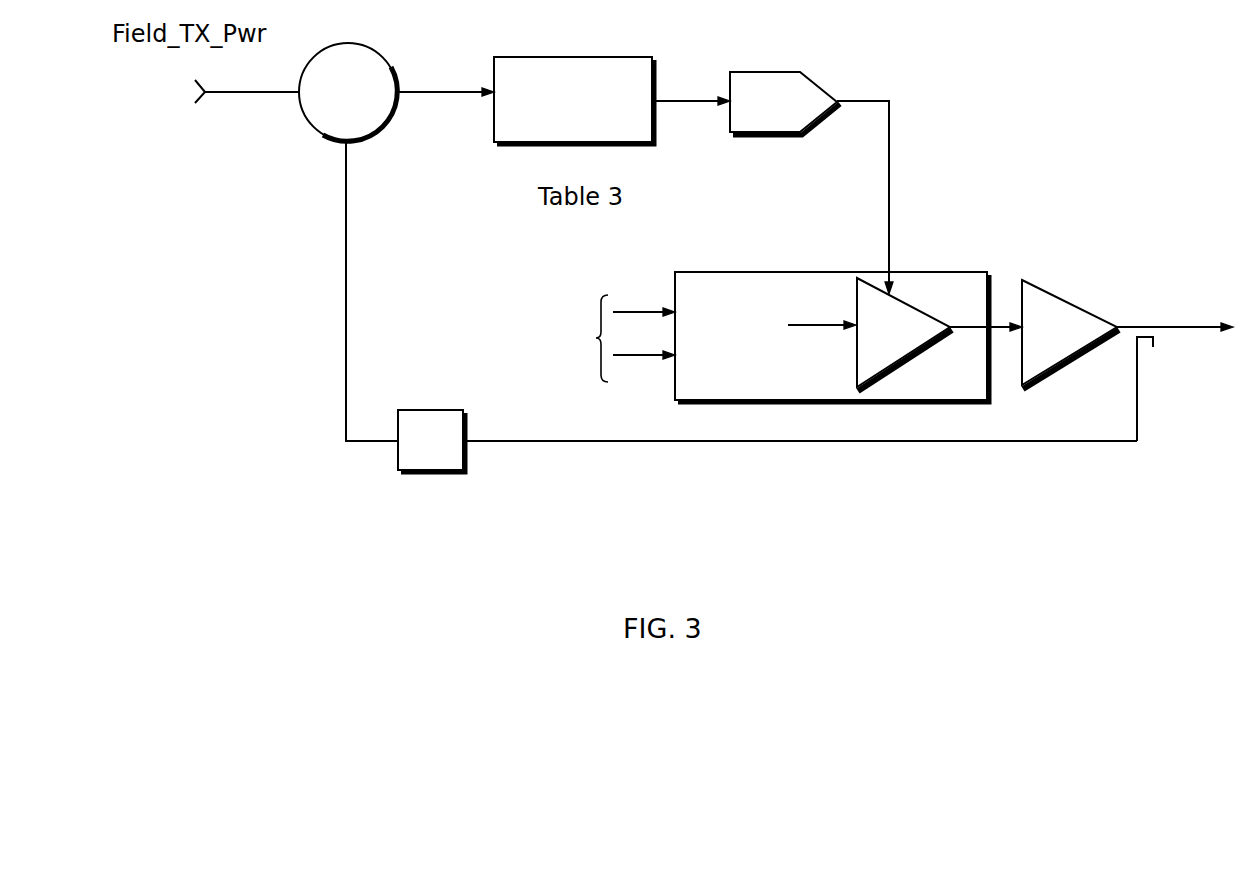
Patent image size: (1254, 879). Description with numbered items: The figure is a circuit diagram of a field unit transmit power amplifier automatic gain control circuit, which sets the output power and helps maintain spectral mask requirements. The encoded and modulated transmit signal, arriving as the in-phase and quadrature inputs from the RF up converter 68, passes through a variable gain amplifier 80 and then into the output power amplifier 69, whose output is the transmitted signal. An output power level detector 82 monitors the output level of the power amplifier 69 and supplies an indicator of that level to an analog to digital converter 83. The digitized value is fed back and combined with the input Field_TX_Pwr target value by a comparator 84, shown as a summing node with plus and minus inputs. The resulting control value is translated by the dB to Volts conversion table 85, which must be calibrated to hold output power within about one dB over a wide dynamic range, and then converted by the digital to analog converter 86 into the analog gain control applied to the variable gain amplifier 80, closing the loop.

The comparator 84 is at (373, 50).
The dB to Volts conversion table 85 is at (538, 57).
The digital to analog converter 86 is at (743, 72).
The variable gain amplifier 80 is at (773, 272).
The power amplifier 69 is at (1070, 303).
The output power level detector 82 is at (1143, 340).
The analog to digital converter 83 is at (435, 473).
The radio frequency up converter 68 is at (583, 338).